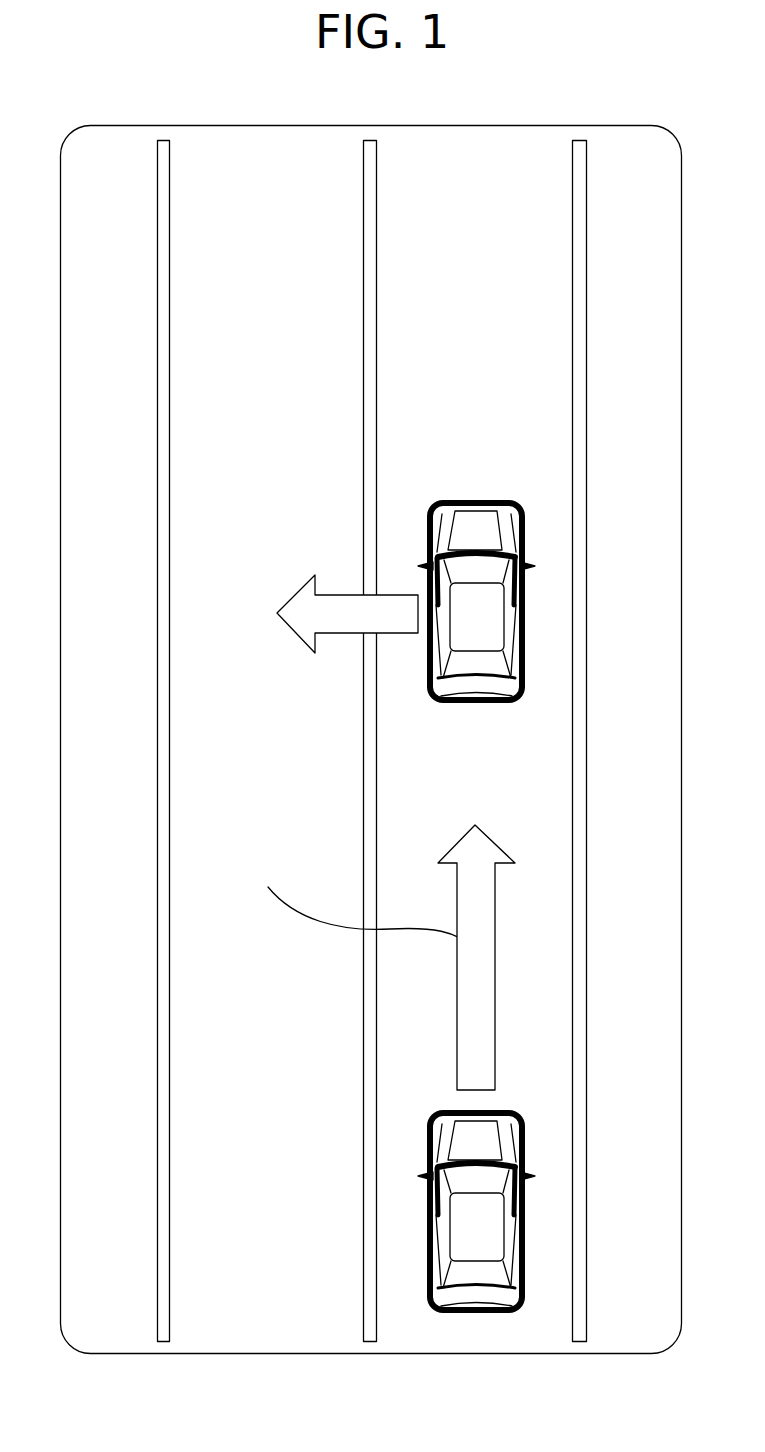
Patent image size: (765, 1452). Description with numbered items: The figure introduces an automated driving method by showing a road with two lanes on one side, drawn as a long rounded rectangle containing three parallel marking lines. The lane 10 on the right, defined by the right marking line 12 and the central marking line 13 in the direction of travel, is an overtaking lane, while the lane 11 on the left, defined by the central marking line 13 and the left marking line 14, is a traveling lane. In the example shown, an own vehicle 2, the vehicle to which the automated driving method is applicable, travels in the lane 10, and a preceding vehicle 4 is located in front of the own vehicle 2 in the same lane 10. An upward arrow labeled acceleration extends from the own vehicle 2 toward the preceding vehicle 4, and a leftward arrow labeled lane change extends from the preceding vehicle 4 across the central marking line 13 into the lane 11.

The own vehicle 2 is at (515, 1220).
The preceding vehicle 4 is at (515, 608).
The lane 10 is at (473, 173).
The lane 11 is at (268, 170).
The right marking line 12 is at (588, 212).
The central marking line 13 is at (378, 212).
The left marking line 14 is at (171, 207).